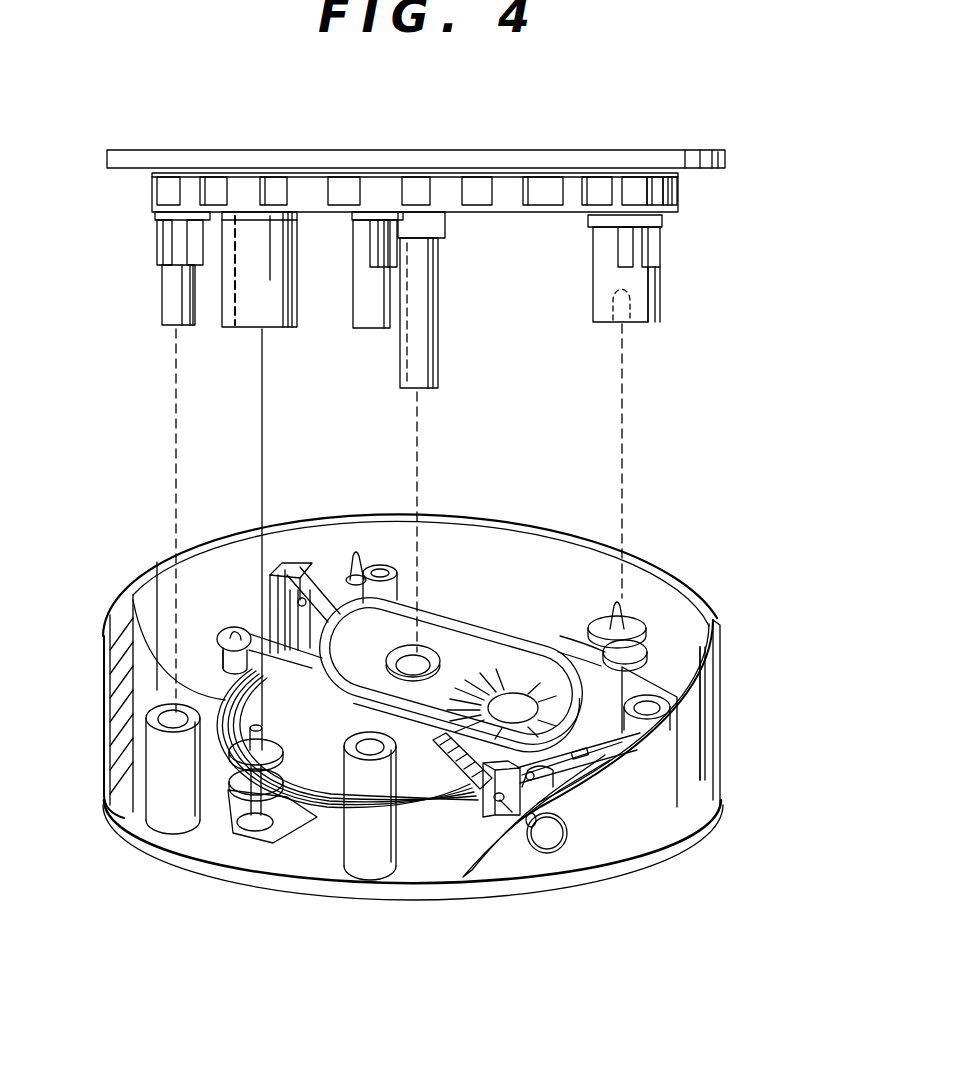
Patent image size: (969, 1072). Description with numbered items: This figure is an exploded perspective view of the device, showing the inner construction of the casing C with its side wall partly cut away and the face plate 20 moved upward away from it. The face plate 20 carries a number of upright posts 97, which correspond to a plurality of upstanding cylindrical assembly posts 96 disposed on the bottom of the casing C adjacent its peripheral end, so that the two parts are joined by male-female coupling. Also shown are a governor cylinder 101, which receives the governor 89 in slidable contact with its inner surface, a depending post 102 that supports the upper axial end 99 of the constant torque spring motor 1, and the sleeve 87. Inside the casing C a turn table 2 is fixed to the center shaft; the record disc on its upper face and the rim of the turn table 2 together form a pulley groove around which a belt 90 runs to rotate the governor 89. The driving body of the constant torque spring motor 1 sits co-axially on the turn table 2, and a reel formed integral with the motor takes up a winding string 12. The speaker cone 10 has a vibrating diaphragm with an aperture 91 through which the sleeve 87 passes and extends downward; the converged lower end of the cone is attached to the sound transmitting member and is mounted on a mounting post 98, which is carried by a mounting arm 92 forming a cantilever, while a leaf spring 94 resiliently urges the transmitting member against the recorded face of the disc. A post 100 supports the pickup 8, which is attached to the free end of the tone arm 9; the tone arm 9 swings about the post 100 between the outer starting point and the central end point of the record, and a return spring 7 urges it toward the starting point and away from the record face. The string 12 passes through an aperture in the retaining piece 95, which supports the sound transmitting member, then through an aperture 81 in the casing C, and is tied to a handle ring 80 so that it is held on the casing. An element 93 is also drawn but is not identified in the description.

The face plate 20 is at (645, 157).
The upright posts 97 is at (162, 303).
The governor cylinder 101 is at (297, 307).
The sleeve 87 is at (438, 265).
The depending post 102 is at (593, 305).
The casing C is at (692, 568).
The constant torque spring motor 1 is at (672, 645).
The turn table 2 is at (222, 680).
The speaker cone 10 is at (502, 675).
The aperture 91 is at (416, 663).
The mounting post 98 is at (305, 541).
The leaf spring 94 is at (277, 572).
The pins 93 is at (357, 556).
The mounting arm 92 is at (388, 570).
The winding string 12 is at (455, 770).
The belt 90 is at (227, 810).
The governor 89 is at (280, 820).
The cylindrical assembly posts 96 is at (160, 803).
The upper axial end of the constant torque spring motor 99 is at (618, 600).
The post 100 is at (668, 748).
The return spring 7 is at (628, 750).
The pickup 8 is at (547, 772).
The tone arm 9 is at (578, 763).
The retaining piece 95 is at (477, 800).
The handle ring 80 is at (550, 853).
The aperture 81 is at (531, 827).